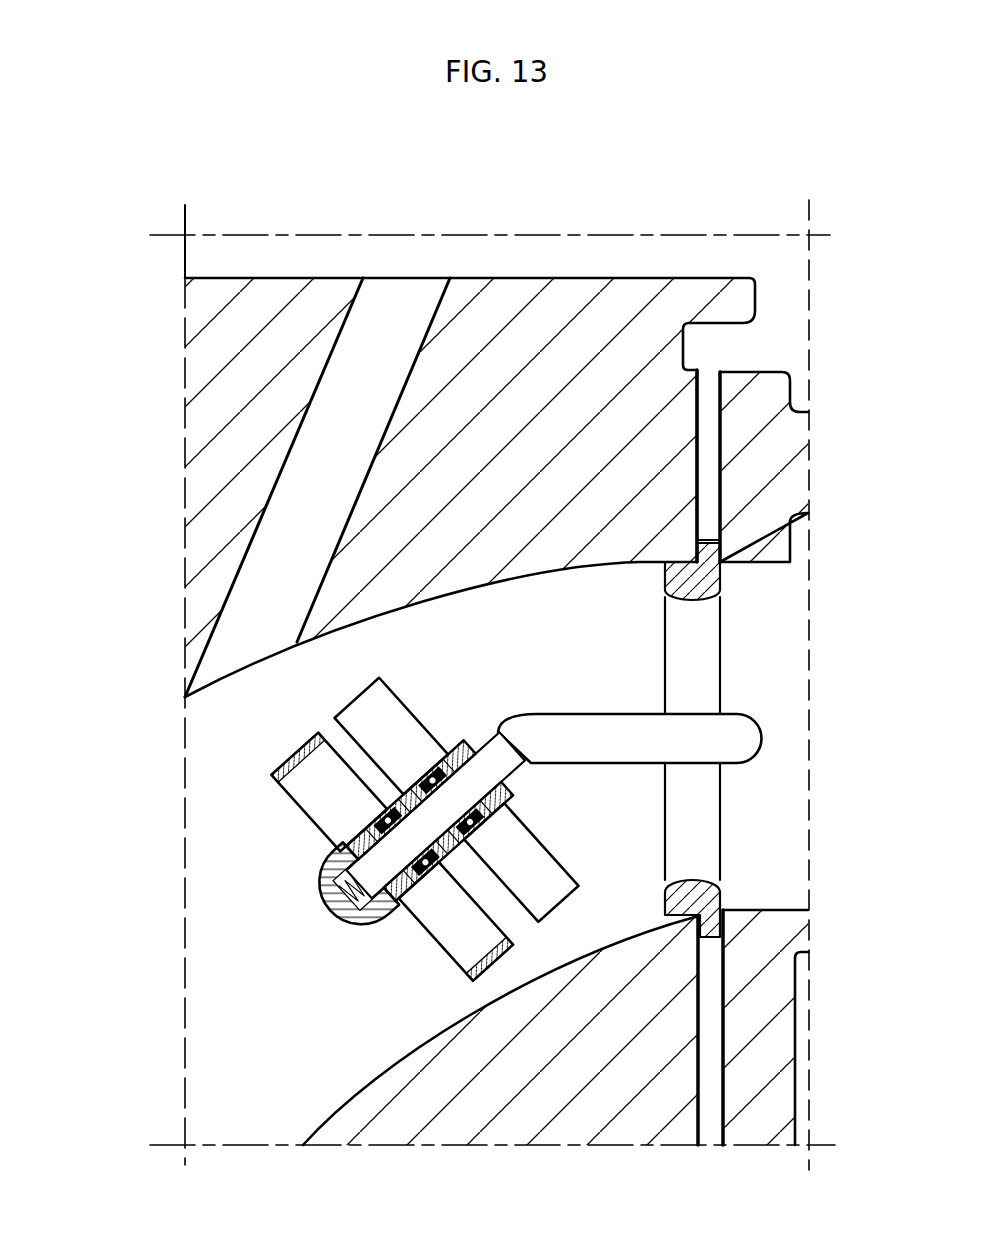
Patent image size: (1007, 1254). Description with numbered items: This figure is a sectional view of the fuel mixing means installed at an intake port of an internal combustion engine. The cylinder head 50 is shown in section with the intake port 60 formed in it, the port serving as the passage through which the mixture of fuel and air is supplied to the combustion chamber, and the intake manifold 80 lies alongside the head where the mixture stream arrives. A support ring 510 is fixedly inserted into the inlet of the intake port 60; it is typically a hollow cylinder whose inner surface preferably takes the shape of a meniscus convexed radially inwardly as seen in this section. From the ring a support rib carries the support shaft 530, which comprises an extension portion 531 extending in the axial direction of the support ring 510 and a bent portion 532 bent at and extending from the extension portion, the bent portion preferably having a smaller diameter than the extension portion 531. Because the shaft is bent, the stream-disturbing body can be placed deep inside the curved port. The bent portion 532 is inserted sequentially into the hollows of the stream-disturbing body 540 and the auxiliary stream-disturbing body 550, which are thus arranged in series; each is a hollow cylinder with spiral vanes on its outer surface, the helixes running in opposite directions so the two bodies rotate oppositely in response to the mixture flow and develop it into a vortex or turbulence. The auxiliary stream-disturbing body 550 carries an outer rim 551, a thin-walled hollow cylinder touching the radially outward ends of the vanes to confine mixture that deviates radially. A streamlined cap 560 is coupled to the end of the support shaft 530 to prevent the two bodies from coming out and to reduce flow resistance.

The cylinder head 50 is at (638, 288).
The intake port 60 is at (201, 724).
The intake manifold 80 is at (779, 445).
The support ring 510 is at (714, 577).
The support shaft 530 is at (608, 637).
The extension portion 531 is at (633, 715).
The bent portion 532 is at (478, 757).
The stream-disturbing body 540 is at (480, 850).
The auxiliary stream-disturbing body 550 is at (345, 825).
The outer rim 551 is at (288, 758).
The streamlined cap 560 is at (356, 930).